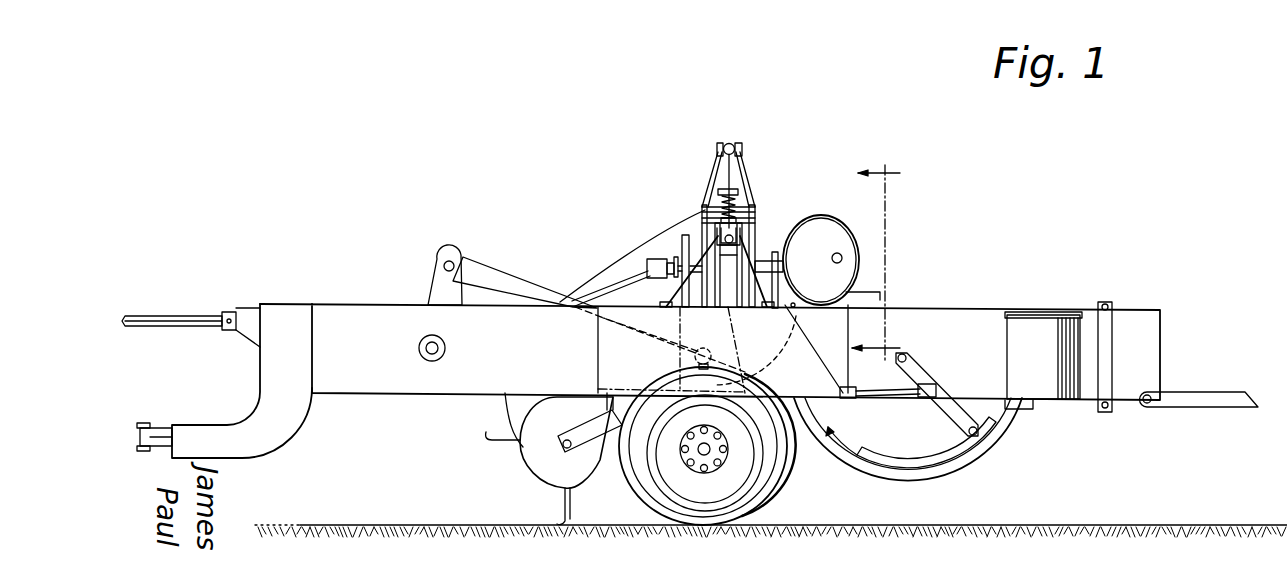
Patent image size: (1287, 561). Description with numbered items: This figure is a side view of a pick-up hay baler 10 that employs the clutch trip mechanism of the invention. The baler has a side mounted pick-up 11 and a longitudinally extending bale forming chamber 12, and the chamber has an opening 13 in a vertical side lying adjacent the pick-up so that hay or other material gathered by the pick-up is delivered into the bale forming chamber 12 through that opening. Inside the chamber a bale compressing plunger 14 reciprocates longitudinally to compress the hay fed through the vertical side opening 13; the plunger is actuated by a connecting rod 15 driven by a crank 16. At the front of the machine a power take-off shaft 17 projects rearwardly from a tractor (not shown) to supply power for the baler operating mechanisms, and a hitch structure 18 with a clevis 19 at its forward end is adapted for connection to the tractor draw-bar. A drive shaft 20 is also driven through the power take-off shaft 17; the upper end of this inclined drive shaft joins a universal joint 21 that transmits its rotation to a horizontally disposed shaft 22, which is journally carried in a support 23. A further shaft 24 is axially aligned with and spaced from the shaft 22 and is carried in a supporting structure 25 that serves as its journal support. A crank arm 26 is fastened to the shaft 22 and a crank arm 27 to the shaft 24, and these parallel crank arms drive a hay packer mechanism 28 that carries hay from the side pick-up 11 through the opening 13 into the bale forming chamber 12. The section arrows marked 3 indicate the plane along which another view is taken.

The section line 3 is at (887, 264).
The pick-up hay baler 10 is at (476, 404).
The side mounted pick-up 11 is at (550, 462).
The bale forming chamber 12 is at (920, 312).
The opening 13 is at (598, 347).
The bale compressing plunger 14 is at (730, 329).
The connecting rod 15 is at (498, 278).
The crank 16 is at (437, 268).
The power take-off shaft 17 is at (152, 313).
The hitch structure 18 is at (185, 432).
The clevis 19 is at (148, 427).
The drive shaft 20 is at (620, 285).
The universal joint 21 is at (668, 298).
The shaft 22 is at (702, 230).
The support 23 is at (682, 250).
The shaft 24 is at (766, 261).
The supporting structure 25 is at (793, 240).
The crank arm 26 is at (718, 200).
The crank arm 27 is at (757, 210).
The hay packer mechanism 28 is at (729, 143).